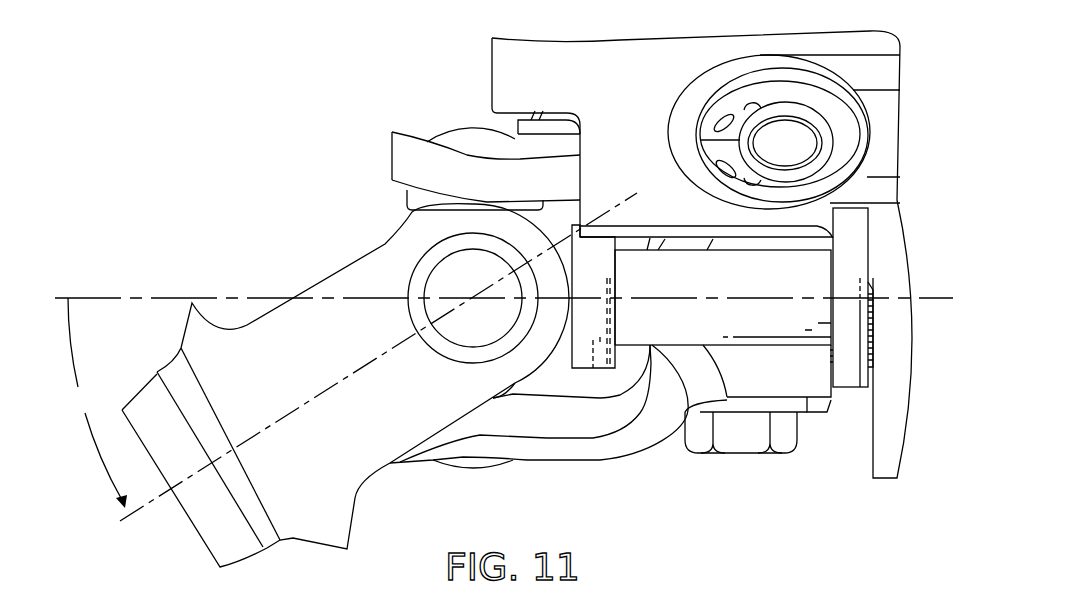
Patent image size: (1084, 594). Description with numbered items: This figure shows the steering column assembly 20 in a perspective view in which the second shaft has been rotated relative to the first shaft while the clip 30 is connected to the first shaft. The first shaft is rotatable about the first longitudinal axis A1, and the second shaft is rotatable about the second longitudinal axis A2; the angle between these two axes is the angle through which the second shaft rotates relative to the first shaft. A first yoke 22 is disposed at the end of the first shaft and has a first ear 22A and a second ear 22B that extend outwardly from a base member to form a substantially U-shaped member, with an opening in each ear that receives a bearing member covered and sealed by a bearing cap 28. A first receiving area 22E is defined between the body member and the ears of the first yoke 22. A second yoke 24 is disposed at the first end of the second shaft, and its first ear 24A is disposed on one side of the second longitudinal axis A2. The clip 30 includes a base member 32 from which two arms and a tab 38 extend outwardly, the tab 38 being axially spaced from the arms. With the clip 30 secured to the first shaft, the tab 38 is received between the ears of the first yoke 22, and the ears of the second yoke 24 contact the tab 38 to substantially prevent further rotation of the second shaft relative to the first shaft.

The universal joint assembly 20 is at (391, 94).
The first yoke 22 is at (651, 279).
The first ear 22A is at (545, 449).
The second ear 22B is at (392, 153).
The first receiving area 22E is at (551, 216).
The second yoke 24 is at (322, 276).
The first ear 24A is at (415, 242).
The bearing cap 28 is at (453, 128).
The clip 30 is at (845, 396).
The base member 32 is at (752, 347).
The tab 38 is at (583, 355).
The first longitudinal axis A1 is at (932, 300).
The second longitudinal axis A2 is at (290, 410).